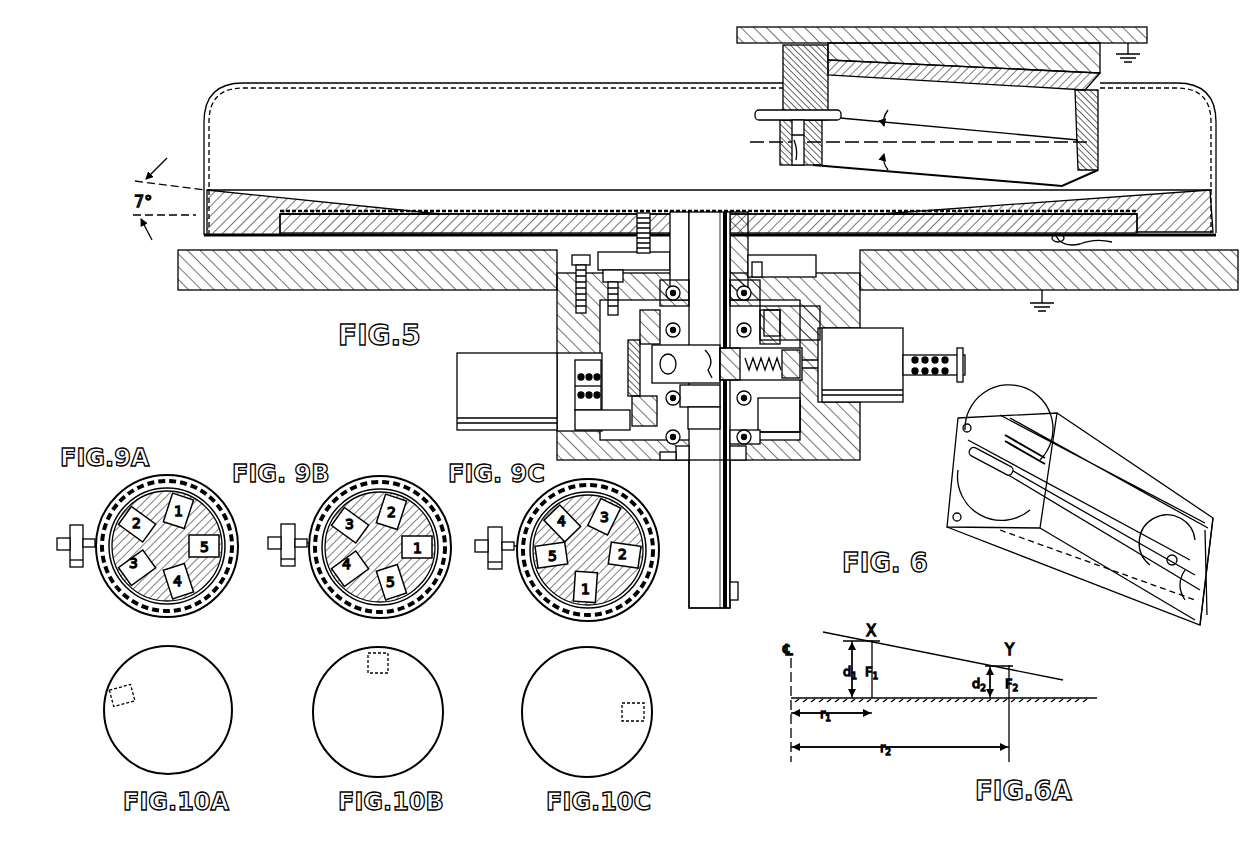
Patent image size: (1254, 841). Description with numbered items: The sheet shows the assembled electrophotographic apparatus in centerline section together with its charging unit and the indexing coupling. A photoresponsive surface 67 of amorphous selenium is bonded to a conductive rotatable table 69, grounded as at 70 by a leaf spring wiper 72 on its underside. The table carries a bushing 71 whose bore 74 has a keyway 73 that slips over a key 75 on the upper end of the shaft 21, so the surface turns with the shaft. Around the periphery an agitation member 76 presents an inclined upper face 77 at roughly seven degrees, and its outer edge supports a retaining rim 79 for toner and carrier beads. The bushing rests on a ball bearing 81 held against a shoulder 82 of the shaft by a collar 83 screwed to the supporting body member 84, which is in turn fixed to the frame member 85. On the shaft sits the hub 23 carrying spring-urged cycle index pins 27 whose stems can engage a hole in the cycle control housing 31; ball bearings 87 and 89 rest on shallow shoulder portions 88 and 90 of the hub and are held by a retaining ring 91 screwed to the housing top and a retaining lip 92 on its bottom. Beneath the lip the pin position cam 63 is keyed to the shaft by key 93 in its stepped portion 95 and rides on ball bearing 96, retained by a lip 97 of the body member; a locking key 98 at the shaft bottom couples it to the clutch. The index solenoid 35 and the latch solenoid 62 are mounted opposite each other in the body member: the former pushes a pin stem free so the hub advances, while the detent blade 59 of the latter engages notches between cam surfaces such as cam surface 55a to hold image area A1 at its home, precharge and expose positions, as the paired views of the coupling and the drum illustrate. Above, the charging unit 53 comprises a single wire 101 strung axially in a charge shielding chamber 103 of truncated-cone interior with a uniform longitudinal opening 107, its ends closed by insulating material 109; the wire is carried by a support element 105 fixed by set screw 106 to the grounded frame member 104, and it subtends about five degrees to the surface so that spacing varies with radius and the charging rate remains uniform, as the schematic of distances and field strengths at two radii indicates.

In FIG. 5, the shaft 21 is at (709, 554).
In FIG. 5, the hub 23 is at (697, 364).
In FIG. 5, the cycle index pin 27 is at (796, 360).
In FIG. 5, the cycle control housing 31 is at (628, 360).
In FIG. 5, the index solenoid 35 is at (891, 369).
In FIG. 5, the charging unit 53 is at (763, 129).
In FIG. 6, the charging unit 53 is at (1153, 450).
In FIG. 5, the cam surface 55a is at (624, 418).
In FIG. 5, the detent blade 59 is at (600, 374).
In FIG. 9A, the detent blade 59 is at (90, 528).
In FIG. 9B, the detent blade 59 is at (301, 528).
In FIG. 9C, the detent blade 59 is at (508, 531).
In FIG. 5, the latch solenoid 62 is at (516, 396).
In FIG. 9A, the latch solenoid 62 is at (76, 567).
In FIG. 9B, the latch solenoid 62 is at (289, 566).
In FIG. 9C, the latch solenoid 62 is at (496, 569).
In FIG. 5, the pin position cam 63 is at (790, 421).
In FIG. 5, the photoresponsive surface 67 is at (432, 210).
In FIG. 6A, the photoresponsive surface 67 is at (1080, 698).
In FIG. 5, the rotatable table 69 is at (502, 215).
In FIG. 5, the ground 70 is at (1044, 303).
In FIG. 5, the bushing 71 is at (741, 214).
In FIG. 5, the leaf spring wiper 72 is at (1091, 243).
In FIG. 5, the keyway 73 is at (700, 216).
In FIG. 5, the bore 74 is at (694, 214).
In FIG. 5, the key 75 is at (717, 259).
In FIG. 5, the agitation member 76 is at (204, 235).
In FIG. 5, the inclined upper face 77 is at (335, 190).
In FIG. 5, the retaining rim 79 is at (232, 90).
In FIG. 5, the ball bearing 81 is at (752, 278).
In FIG. 5, the shoulder 82 is at (713, 295).
In FIG. 5, the collar 83 is at (808, 277).
In FIG. 5, the supporting body member 84 is at (557, 322).
In FIG. 5, the frame member 85 is at (316, 290).
In FIG. 5, the ball bearing 87 is at (680, 322).
In FIG. 5, the shoulder portion 88 is at (684, 334).
In FIG. 5, the ball bearing 89 is at (699, 401).
In FIG. 5, the shoulder portion 90 is at (690, 392).
In FIG. 5, the retaining ring 91 is at (768, 306).
In FIG. 5, the retaining lip 92 is at (646, 428).
In FIG. 5, the key 93 is at (722, 437).
In FIG. 5, the stepped portion 95 is at (688, 450).
In FIG. 5, the ball bearing 96 is at (733, 462).
In FIG. 5, the lip 97 is at (686, 462).
In FIG. 5, the locking key 98 is at (738, 590).
In FIG. 5, the wire 101 is at (760, 115).
In FIG. 6, the wire 101 is at (1028, 505).
In FIG. 6A, the wire 101 is at (1040, 670).
In FIG. 6, the charge shielding chamber 103 is at (1013, 432).
In FIG. 5, the frame member 104 is at (757, 45).
In FIG. 5, the support element 105 is at (832, 112).
In FIG. 6, the support element 105 is at (1003, 472).
In FIG. 5, the set screw 106 is at (799, 165).
In FIG. 6, the longitudinal opening 107 is at (1190, 578).
In FIG. 5, the insulating material 109 is at (829, 80).
In FIG. 10A, the image area A1 is at (133, 703).
In FIG. 10B, the image area A1 is at (388, 675).
In FIG. 10C, the image area A1 is at (622, 712).